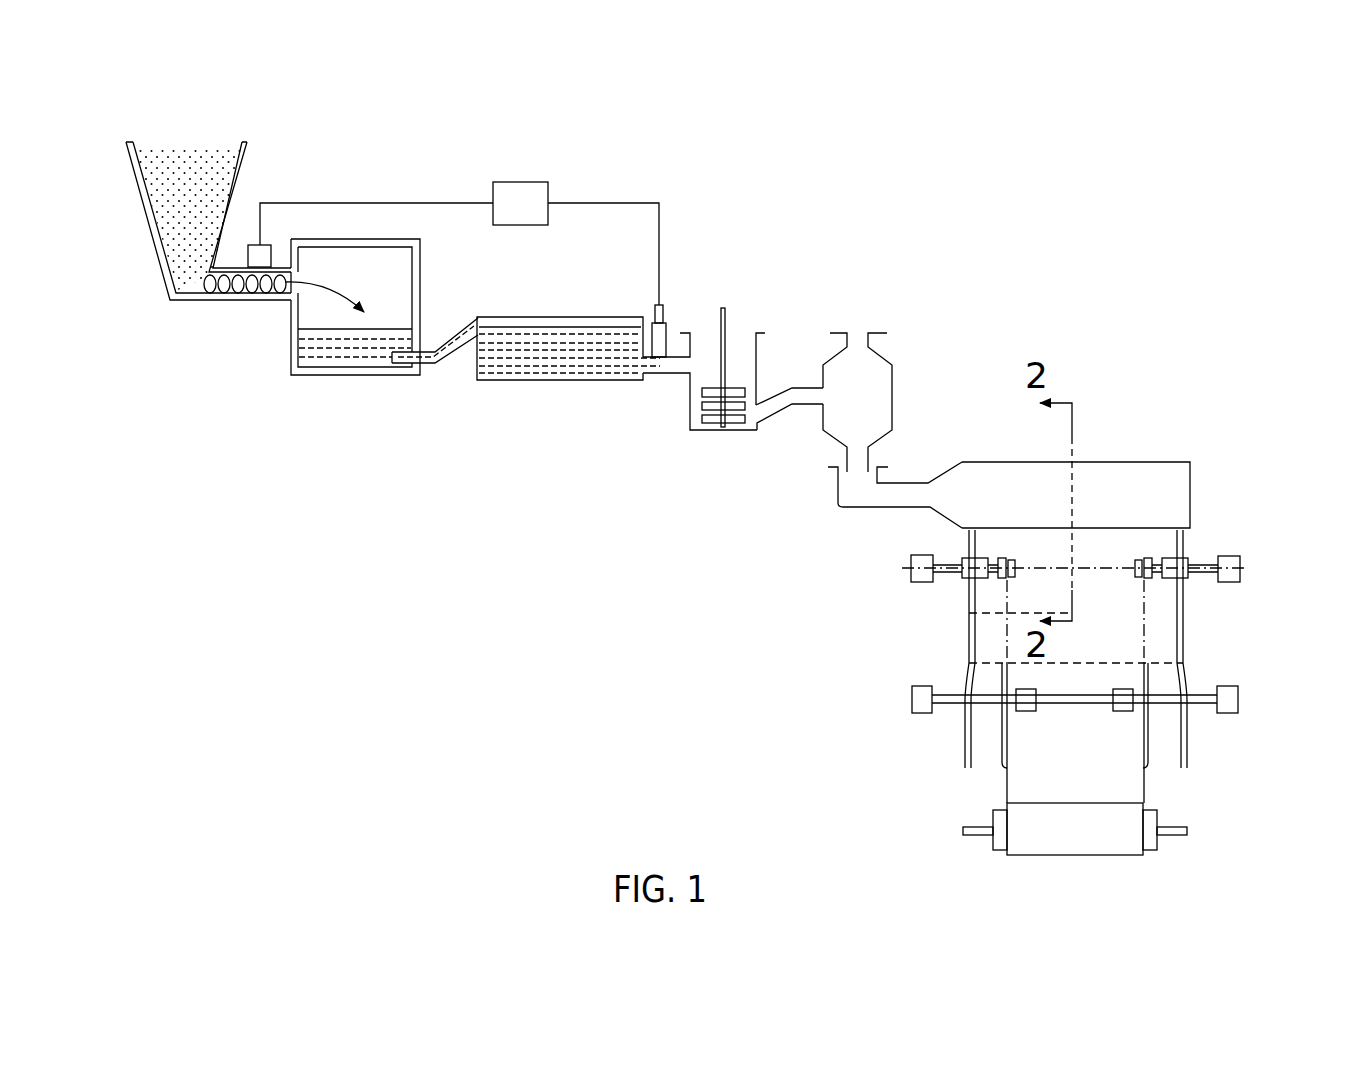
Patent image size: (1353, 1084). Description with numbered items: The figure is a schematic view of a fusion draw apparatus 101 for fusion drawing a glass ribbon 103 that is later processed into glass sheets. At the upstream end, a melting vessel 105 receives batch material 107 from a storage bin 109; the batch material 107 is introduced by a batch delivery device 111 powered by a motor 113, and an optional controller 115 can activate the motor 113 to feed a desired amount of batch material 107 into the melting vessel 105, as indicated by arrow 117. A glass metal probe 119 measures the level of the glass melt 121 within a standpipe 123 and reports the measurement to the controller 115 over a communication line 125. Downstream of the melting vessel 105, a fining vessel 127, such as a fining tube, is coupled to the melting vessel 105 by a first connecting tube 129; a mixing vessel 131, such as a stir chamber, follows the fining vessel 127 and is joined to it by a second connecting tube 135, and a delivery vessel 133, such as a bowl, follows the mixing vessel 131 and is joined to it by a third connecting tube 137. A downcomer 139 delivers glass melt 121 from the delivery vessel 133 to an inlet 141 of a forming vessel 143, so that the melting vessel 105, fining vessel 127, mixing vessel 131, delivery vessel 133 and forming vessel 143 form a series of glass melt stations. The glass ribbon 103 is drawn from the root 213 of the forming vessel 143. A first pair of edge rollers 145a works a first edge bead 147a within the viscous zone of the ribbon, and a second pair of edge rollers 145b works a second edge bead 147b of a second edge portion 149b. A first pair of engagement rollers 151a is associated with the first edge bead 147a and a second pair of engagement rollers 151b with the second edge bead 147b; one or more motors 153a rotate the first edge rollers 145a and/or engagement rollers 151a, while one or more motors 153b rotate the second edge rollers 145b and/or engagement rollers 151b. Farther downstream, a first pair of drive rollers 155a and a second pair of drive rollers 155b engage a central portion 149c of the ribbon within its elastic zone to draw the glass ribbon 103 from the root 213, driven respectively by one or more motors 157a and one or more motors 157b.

The fusion draw apparatus 101 is at (887, 237).
The glass ribbon 103 is at (1055, 540).
The melting vessel 105 is at (336, 396).
The batch material 107 is at (178, 142).
The storage bin 109 is at (145, 222).
The batch delivery device 111 is at (240, 290).
The motor 113 is at (265, 243).
The controller 115 is at (520, 182).
The arrow 117 is at (320, 285).
The glass metal probe 119 is at (653, 307).
The glass melt 121 is at (388, 328).
The standpipe 123 is at (668, 327).
The communication line 125 is at (600, 202).
The fining vessel 127 is at (553, 317).
The first connecting tube 129 is at (452, 333).
The mixing vessel 131 is at (758, 355).
The delivery vessel 133 is at (893, 373).
The second connecting tube 135 is at (673, 373).
The third connecting tube 137 is at (782, 412).
The downcomer 139 is at (872, 455).
The inlet 141 is at (837, 488).
The forming vessel 143 is at (1143, 462).
The first pair of edge rollers 145a is at (958, 586).
The second pair of edge rollers 145b is at (1190, 588).
The first edge bead 147a is at (968, 632).
The second edge bead 147b is at (1183, 643).
The second edge portion 149b is at (985, 544).
The central portion 149c is at (1077, 798).
The first pair of engagement rollers 151a is at (1019, 561).
The second pair of engagement rollers 151b is at (1131, 562).
The motors 153a is at (896, 572).
The motors 153b is at (1249, 579).
The first pair of drive rollers 155a is at (1022, 716).
The second pair of drive rollers 155b is at (1129, 716).
The motors 157a is at (912, 698).
The motors 157b is at (1230, 714).
The root 213 is at (1085, 531).